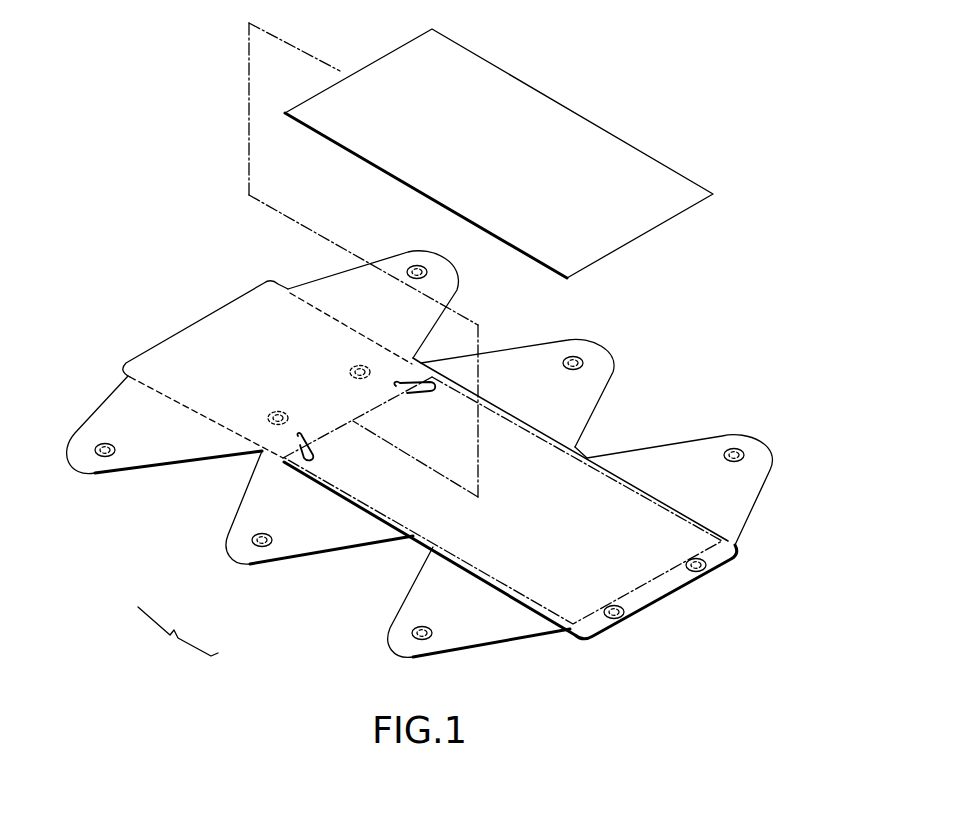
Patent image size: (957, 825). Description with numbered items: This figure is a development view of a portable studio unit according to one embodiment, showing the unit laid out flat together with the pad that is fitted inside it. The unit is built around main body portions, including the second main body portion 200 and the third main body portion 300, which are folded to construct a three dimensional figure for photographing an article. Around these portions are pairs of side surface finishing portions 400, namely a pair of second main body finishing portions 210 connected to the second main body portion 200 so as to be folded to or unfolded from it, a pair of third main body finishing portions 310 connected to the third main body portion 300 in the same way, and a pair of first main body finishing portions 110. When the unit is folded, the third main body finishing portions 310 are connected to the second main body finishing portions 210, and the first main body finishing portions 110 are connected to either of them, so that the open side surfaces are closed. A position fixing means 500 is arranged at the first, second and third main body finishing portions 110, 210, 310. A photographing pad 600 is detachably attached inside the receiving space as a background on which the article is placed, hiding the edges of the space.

The first main body finishing portions 110 is at (602, 347).
The second main body portion 200 is at (208, 322).
The second main body finishing portions 210 is at (458, 285).
The third main body portion 300 is at (620, 508).
The third main body finishing portions 310 is at (740, 435).
The side surface finishing portions 400 is at (178, 636).
The position fixing means 500 is at (417, 267).
The photographing pad 600 is at (573, 110).